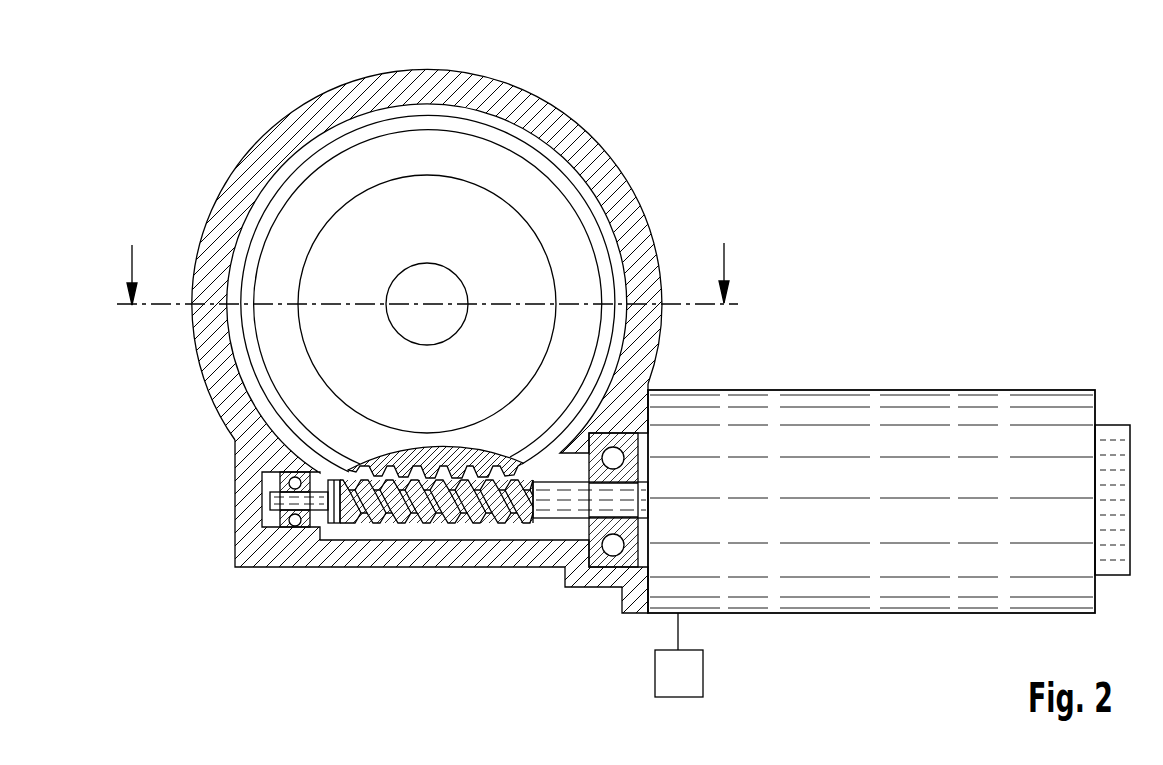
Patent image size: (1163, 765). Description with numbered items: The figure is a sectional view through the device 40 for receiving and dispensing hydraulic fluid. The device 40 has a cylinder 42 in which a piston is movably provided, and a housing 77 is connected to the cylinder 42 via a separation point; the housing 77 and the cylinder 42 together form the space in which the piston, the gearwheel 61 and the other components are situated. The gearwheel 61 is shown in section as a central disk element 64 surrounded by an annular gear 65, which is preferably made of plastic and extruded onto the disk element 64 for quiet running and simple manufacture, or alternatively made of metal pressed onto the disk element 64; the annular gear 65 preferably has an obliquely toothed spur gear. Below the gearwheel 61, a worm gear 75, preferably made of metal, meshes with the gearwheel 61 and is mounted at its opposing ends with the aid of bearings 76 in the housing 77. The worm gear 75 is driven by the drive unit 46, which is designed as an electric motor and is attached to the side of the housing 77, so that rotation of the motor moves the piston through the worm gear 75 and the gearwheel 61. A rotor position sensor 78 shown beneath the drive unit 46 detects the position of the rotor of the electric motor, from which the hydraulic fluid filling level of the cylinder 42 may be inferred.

The device 40 is at (581, 361).
The cylinder 42 is at (573, 143).
The drive unit 46 is at (872, 418).
The gearwheel 61 is at (512, 148).
The central disk element 64 is at (347, 245).
The annular gear 65 is at (450, 128).
The worm gear 75 is at (368, 512).
The bearings 76 is at (295, 526).
The housing 77 is at (218, 370).
The rotor position sensor 78 is at (705, 672).